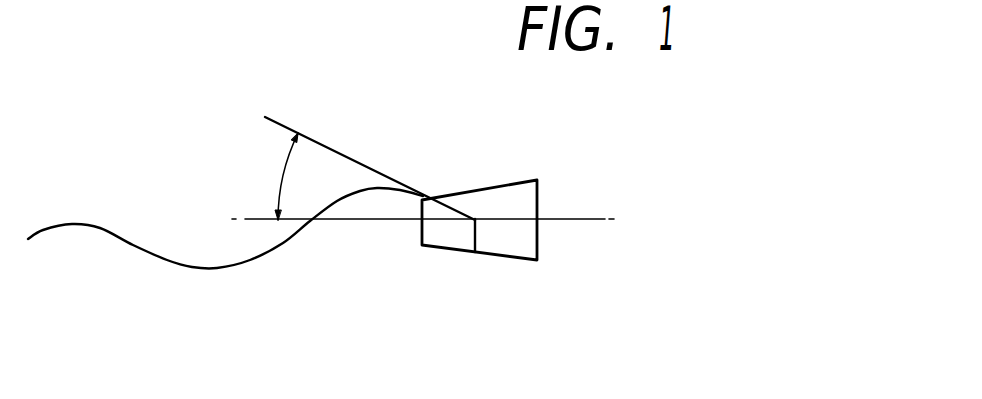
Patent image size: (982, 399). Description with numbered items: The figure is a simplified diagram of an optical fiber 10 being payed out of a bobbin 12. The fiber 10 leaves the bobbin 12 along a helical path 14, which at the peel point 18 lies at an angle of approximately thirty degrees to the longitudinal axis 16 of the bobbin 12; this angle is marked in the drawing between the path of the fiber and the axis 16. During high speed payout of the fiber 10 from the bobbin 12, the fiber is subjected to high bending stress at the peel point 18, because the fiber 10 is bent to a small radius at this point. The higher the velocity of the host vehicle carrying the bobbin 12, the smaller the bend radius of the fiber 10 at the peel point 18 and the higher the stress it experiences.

The optical fiber 10 is at (77, 224).
The bobbin 12 is at (508, 185).
The helical path 14 is at (192, 268).
The longitudinal axis 16 is at (577, 221).
The peel point 18 is at (475, 219).